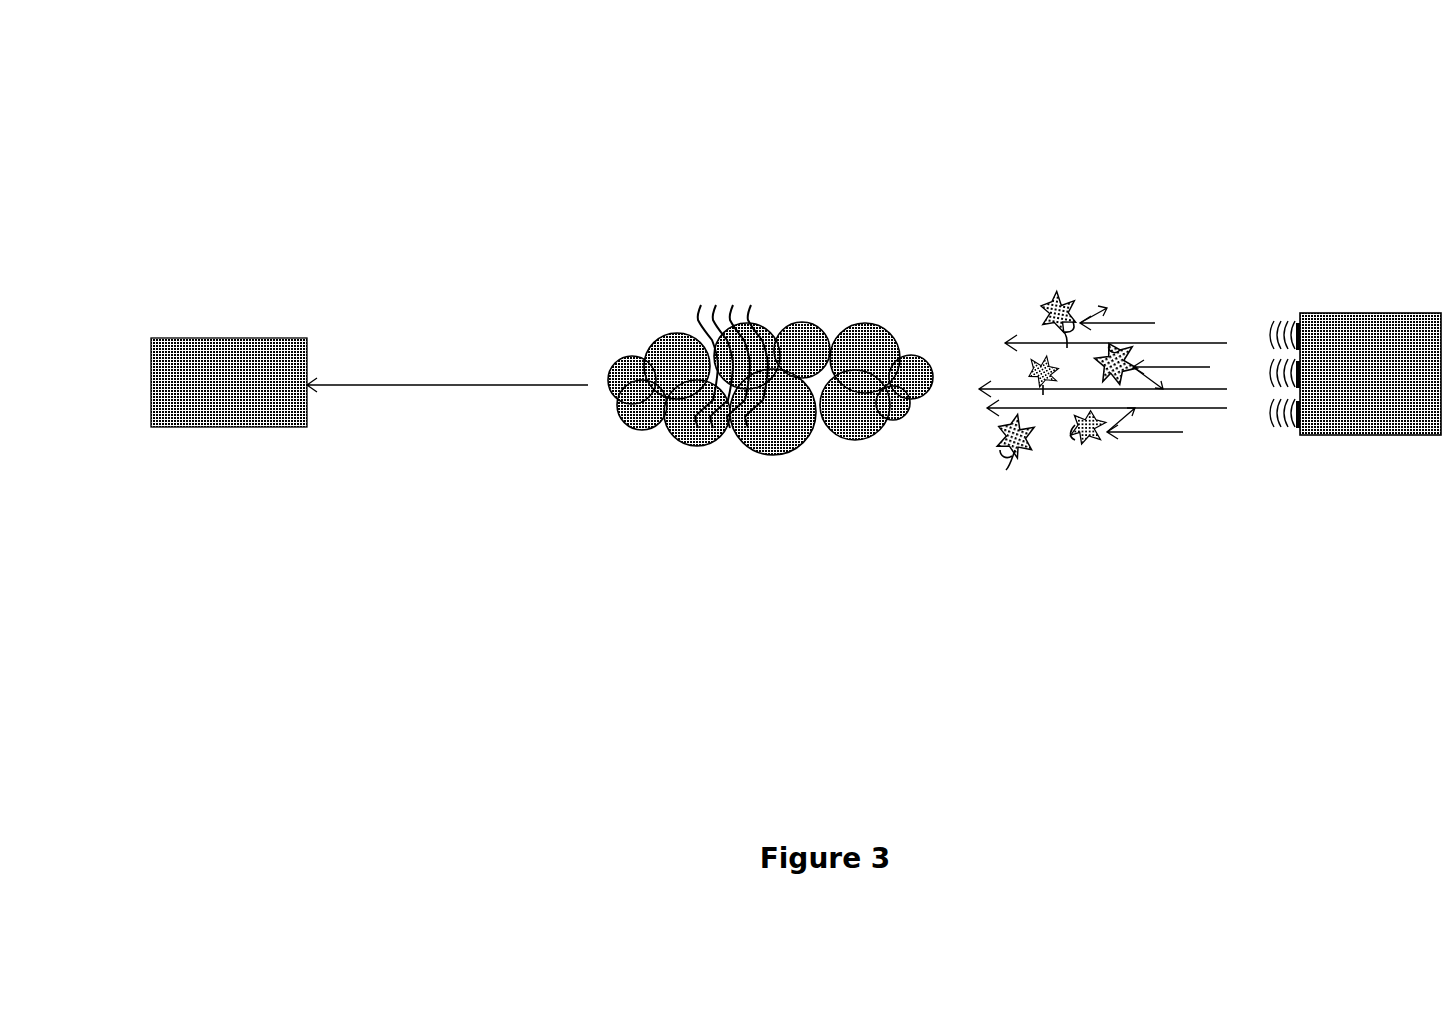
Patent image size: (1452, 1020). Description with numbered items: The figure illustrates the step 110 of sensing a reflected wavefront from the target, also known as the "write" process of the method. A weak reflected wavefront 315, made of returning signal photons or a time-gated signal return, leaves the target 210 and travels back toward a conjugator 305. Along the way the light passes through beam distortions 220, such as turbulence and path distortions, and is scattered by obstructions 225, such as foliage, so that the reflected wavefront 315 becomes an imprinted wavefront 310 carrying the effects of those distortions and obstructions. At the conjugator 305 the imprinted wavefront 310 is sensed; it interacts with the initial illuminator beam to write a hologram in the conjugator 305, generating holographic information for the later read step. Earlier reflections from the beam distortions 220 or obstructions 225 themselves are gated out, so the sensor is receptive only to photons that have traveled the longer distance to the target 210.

The step of sensing a reflected wavefront 110 is at (286, 98).
The conjugator 305 is at (229, 359).
The imprinted wavefront 310 is at (447, 372).
The beam distortions 220 is at (770, 359).
The obstructions 225 is at (1103, 365).
The reflected wavefront 315 is at (1270, 355).
The target 210 is at (1370, 355).